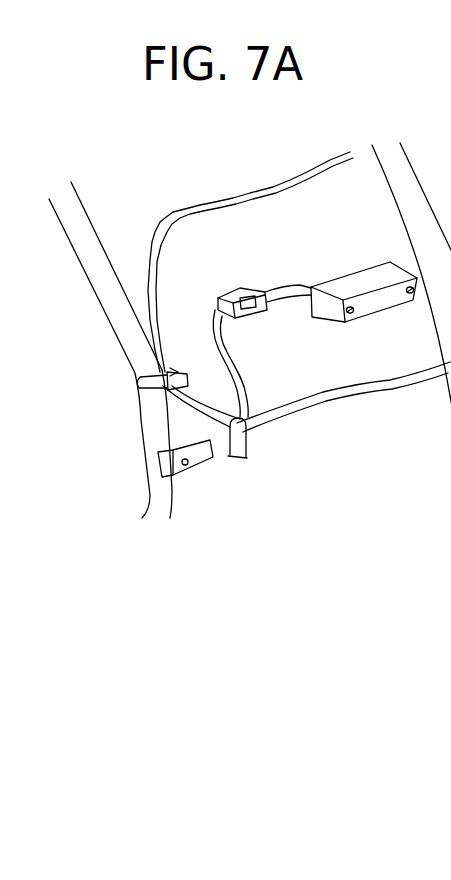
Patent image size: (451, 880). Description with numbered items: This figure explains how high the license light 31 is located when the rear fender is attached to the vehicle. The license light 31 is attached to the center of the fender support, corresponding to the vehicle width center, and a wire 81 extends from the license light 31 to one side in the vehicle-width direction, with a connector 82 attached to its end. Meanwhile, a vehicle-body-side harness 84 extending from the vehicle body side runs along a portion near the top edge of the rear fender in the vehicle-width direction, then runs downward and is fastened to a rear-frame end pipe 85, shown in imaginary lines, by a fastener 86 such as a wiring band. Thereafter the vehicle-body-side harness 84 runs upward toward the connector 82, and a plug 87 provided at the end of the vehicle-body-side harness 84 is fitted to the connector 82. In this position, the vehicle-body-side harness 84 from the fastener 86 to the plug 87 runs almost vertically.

The license light 31 is at (380, 304).
The wire 81 is at (296, 284).
The connector 82 is at (250, 283).
The vehicle-body-side harness 84 is at (232, 368).
The rear-frame end pipe 85 is at (340, 402).
The fastener 86 is at (243, 452).
The plug 87 is at (227, 293).